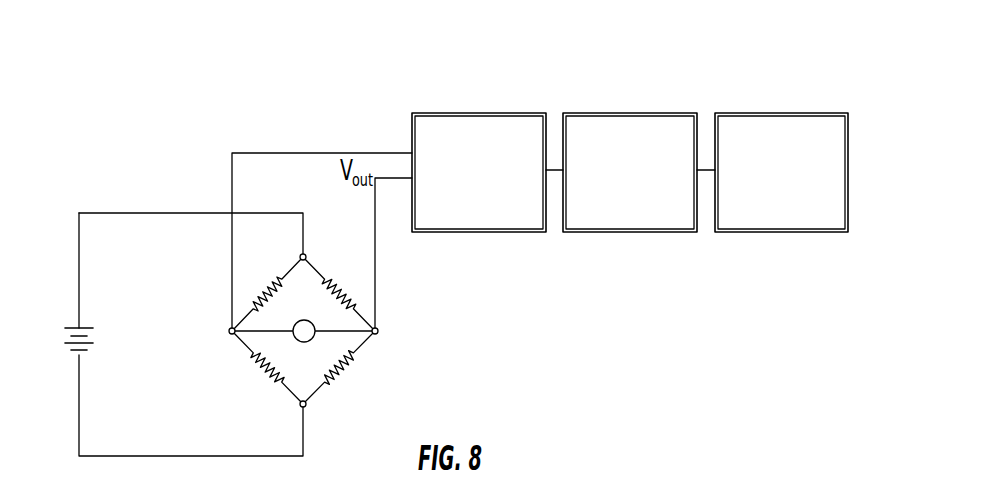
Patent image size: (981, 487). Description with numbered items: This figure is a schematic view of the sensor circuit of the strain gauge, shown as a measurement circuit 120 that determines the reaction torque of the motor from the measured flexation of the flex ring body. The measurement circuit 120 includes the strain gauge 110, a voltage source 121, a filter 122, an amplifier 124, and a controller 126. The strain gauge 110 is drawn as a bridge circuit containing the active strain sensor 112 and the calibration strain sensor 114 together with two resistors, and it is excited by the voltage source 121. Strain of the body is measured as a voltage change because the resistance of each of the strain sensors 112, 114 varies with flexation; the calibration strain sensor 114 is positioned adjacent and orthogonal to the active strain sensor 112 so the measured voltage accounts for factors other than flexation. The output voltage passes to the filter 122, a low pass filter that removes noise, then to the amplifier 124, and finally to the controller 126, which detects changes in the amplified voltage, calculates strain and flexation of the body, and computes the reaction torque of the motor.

The strain gauge 110 is at (330, 354).
The active strain sensor 112 is at (281, 386).
The calibration strain sensor 114 is at (317, 392).
The measurement circuit 120 is at (630, 119).
The voltage source 121 is at (49, 318).
The filter 122 is at (479, 172).
The amplifier 124 is at (630, 172).
The controller 126 is at (781, 172).